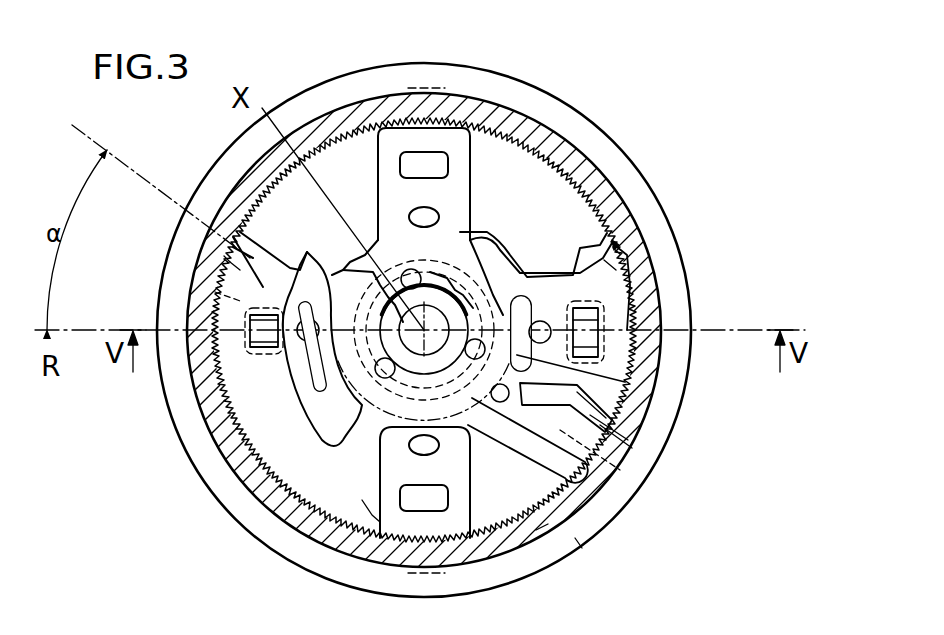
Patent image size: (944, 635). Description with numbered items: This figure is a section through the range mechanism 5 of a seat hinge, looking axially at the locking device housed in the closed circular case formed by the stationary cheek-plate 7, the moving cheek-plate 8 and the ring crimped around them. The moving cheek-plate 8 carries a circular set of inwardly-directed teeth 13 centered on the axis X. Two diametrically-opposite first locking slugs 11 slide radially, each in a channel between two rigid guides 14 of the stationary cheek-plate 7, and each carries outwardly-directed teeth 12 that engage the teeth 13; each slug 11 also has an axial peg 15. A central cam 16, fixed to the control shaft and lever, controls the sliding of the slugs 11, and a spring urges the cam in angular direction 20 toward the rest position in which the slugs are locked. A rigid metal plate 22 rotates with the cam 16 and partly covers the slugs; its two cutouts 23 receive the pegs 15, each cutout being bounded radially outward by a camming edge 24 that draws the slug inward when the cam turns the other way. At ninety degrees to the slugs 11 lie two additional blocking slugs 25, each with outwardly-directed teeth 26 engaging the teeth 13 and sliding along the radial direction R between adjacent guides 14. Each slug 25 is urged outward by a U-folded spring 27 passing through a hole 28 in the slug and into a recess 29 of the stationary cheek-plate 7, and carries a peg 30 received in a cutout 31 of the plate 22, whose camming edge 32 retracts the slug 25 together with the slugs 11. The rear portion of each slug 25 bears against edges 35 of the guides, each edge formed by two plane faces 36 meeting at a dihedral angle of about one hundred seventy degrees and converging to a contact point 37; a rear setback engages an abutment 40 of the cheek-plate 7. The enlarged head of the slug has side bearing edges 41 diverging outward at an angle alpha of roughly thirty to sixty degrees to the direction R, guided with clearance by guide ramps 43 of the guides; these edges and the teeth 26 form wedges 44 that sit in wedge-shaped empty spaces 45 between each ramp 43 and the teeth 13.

The range mechanism 5 is at (472, 331).
The stationary cheek-plate 7 is at (565, 542).
The moving cheek-plate 8 is at (580, 162).
The first locking members or slugs 11 is at (470, 126).
The outwardly-directed teeth 12 is at (408, 540).
The inwardly-directed teeth 13 is at (567, 543).
The rigid guides 14 is at (565, 200).
The peg 15 is at (388, 518).
The cam 16 is at (478, 288).
The angular direction 20 is at (655, 114).
The rigid metal plate 22 is at (254, 507).
The cutouts 23 is at (565, 470).
The camming edge 24 is at (532, 542).
The additional blocking members or slugs 25 is at (258, 350).
The outwardly-directed teeth 26 is at (420, 343).
The spring 27 is at (517, 355).
The hole 28 is at (240, 355).
The recess 29 is at (215, 292).
The peg 30 is at (228, 245).
The cutout 31 is at (345, 417).
The camming edge 32 is at (330, 372).
The edges 35 is at (552, 266).
The plane faces 36 is at (615, 410).
The point 37 is at (625, 428).
The abutment 40 is at (600, 388).
The side bearing edges 41 is at (640, 285).
The guide ramps 43 is at (233, 237).
The wedges 44 is at (230, 262).
The wedge-shaped empty space 45 is at (224, 256).